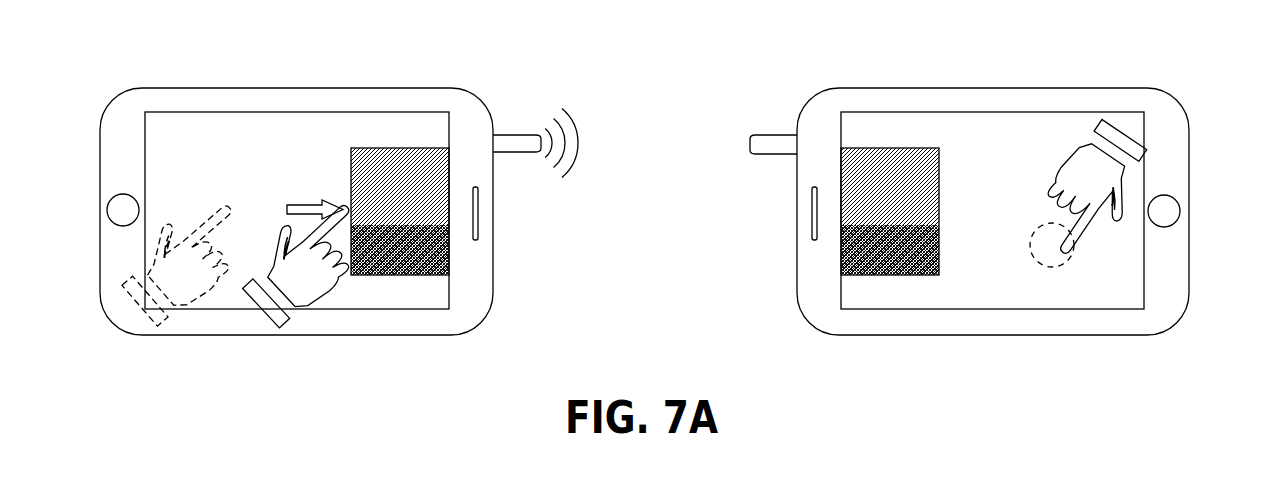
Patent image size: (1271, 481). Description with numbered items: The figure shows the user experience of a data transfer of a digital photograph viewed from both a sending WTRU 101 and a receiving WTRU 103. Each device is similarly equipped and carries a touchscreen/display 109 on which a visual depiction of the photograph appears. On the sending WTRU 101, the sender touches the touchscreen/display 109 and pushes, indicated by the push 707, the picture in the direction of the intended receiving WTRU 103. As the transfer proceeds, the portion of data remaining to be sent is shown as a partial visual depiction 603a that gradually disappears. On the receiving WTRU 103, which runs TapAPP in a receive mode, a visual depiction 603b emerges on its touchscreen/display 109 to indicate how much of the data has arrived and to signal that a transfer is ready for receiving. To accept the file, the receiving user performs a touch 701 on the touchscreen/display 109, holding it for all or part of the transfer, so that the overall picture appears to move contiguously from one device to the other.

The sending WTRU 101 is at (313, 87).
The receiving WTRU 103 is at (1010, 87).
The touchscreen/display 109 is at (373, 310).
The partial visual depiction at the sending WTRU 603a is at (351, 149).
The visual depiction at the receiving WTRU 603b is at (940, 157).
The push 707 is at (305, 203).
The touch 701 is at (1063, 262).